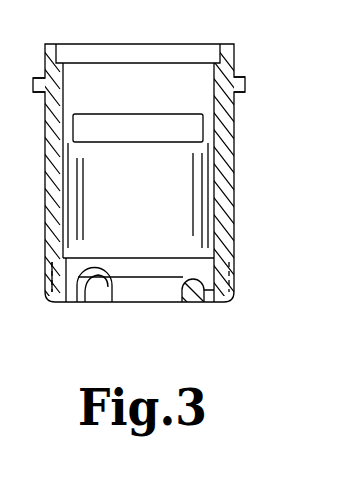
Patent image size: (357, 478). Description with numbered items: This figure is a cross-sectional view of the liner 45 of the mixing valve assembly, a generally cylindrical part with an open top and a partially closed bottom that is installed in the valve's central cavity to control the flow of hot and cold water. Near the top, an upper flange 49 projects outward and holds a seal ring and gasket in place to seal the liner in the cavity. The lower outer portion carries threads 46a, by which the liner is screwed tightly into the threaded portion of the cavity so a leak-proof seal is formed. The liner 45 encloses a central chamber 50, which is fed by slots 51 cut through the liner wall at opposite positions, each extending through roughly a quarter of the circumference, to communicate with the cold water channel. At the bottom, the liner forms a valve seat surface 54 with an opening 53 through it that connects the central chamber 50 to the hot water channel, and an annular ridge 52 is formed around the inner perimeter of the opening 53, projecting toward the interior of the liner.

The liner 45 is at (157, 173).
The upper flange 49 is at (162, 100).
The threads 46a is at (235, 262).
The central chamber 50 is at (138, 200).
The slots 51 is at (108, 142).
The annular ridge 52 is at (97, 304).
The opening 53 is at (178, 299).
The valve seat surface 54 is at (67, 304).